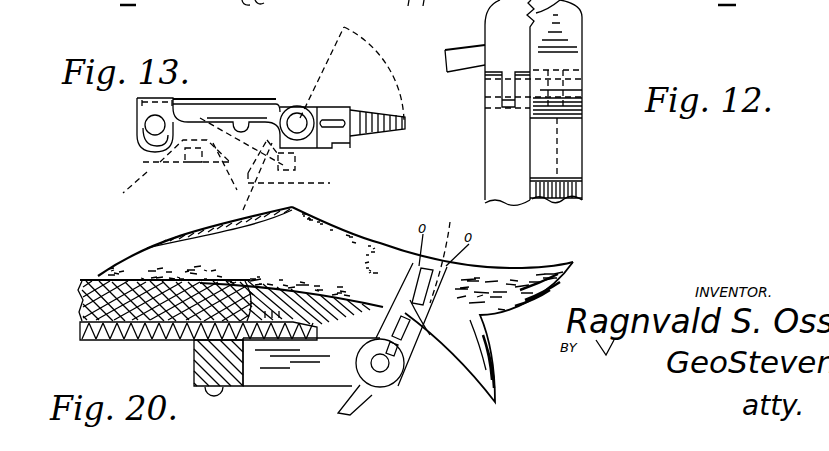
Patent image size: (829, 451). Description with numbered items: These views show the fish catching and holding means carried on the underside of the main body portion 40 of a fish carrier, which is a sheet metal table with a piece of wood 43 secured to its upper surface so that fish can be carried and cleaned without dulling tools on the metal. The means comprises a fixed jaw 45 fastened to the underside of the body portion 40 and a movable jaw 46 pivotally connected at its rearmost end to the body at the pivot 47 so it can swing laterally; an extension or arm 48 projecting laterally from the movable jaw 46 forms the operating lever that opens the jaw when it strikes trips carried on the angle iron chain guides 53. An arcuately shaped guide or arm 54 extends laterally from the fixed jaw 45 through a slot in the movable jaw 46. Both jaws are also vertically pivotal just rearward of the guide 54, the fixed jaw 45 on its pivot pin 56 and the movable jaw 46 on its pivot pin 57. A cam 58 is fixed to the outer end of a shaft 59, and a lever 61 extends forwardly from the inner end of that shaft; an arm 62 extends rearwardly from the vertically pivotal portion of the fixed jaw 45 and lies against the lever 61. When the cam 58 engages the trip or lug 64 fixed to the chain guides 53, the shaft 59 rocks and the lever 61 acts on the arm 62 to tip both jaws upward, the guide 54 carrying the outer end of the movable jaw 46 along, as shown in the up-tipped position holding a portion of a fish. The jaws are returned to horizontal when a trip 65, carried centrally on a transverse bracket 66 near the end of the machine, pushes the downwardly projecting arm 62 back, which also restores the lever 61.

In FIG. 20, the main body portion 40 is at (310, 325).
In FIG. 20, the piece of wood 43 is at (84, 278).
In FIG. 13, the fixed jaw 45 is at (337, 112).
In FIG. 12, the fixed jaw 45 is at (563, 37).
In FIG. 20, the fixed jaw 45 is at (450, 252).
In FIG. 12, the movable jaw 46 is at (492, 125).
In FIG. 20, the movable jaw 46 is at (397, 308).
In FIG. 20, the pivot 47 is at (226, 394).
In FIG. 20, the extension or arm 48 is at (196, 362).
In FIG. 13, the angle iron chain guide 53 is at (117, 187).
In FIG. 13, the guide or arm 54 is at (333, 130).
In FIG. 12, the guide or arm 54 is at (462, 52).
In FIG. 20, the guide or arm 54 is at (408, 327).
In FIG. 13, the pivot pin 56 is at (297, 113).
In FIG. 12, the pivot pin 56 is at (584, 87).
In FIG. 12, the pivot pin 57 is at (480, 95).
In FIG. 20, the pivot pin 57 is at (386, 366).
In FIG. 13, the cam 58 is at (147, 148).
In FIG. 13, the shaft 59 is at (150, 128).
In FIG. 13, the lever 61 is at (218, 110).
In FIG. 12, the lever 61 is at (552, 196).
In FIG. 13, the arm 62 is at (252, 130).
In FIG. 12, the arm 62 is at (570, 150).
In FIG. 20, the arm 62 is at (356, 409).
In FIG. 13, the trip or lug 64 is at (200, 178).
In FIG. 13, the trip 65 is at (300, 183).
In FIG. 13, the transverse bracket 66 is at (330, 183).